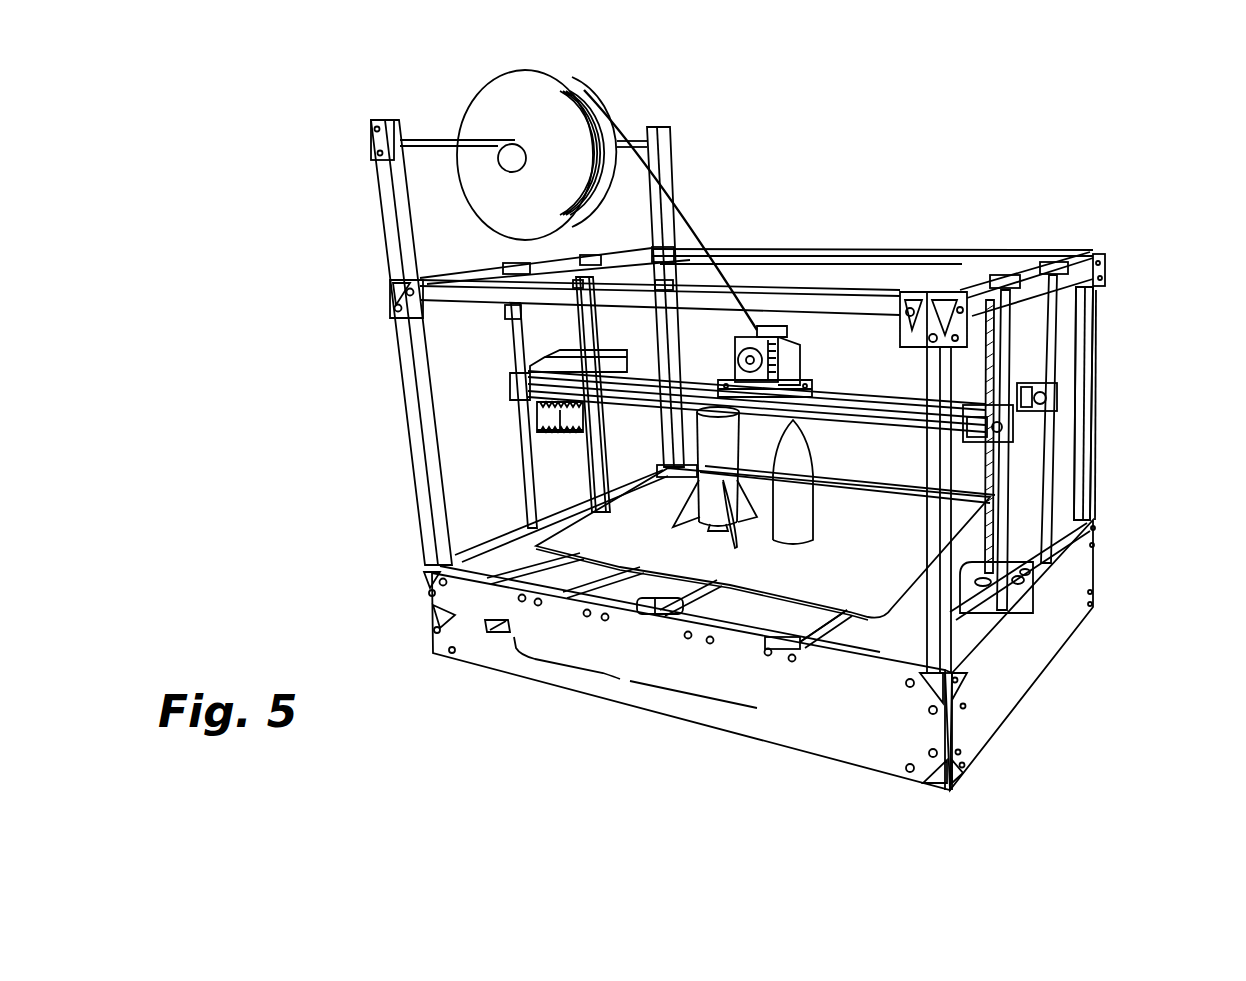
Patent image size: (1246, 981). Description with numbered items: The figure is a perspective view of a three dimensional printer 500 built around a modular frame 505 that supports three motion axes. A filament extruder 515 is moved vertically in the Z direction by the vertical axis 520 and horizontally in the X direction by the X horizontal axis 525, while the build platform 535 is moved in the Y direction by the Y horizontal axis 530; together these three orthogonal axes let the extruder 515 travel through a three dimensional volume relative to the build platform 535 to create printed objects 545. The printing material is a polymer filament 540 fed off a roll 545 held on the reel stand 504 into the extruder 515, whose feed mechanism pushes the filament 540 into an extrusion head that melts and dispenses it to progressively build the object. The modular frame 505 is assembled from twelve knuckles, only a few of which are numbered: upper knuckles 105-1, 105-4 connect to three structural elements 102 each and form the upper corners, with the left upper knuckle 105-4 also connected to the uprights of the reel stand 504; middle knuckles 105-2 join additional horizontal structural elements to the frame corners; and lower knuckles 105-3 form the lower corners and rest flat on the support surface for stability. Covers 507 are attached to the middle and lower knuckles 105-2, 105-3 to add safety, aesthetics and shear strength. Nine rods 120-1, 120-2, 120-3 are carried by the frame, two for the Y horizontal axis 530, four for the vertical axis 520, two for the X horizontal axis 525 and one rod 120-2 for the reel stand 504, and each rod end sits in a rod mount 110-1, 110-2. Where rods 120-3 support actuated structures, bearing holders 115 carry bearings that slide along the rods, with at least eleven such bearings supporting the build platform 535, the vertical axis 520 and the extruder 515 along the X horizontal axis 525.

The three dimensional printer 500 is at (212, 110).
The reel stand 504 is at (682, 66).
The modular frame 505 is at (1150, 152).
The rod mount 110-1 is at (785, 648).
The rod mount 110-2 is at (372, 120).
The rod 120-1 is at (825, 628).
The rod 120-2 is at (441, 138).
The rod 120-3 is at (1047, 475).
The upper knuckle 105-1 is at (1102, 253).
The middle knuckle 105-2 is at (950, 687).
The lower knuckle 105-3 is at (947, 787).
The upper knuckle 105-4 is at (393, 297).
The structural element 102 is at (1088, 319).
The bearing holder 115 is at (1058, 391).
The filament extruder 515 is at (797, 347).
The vertical axis 520 is at (1068, 245).
The X horizontal axis 525 is at (1010, 462).
The build platform 535 is at (573, 547).
The Y horizontal axis 530 is at (620, 680).
The cover 507 is at (1043, 620).
The polymer filament 540 is at (692, 213).
The printed object / roll 545 is at (567, 80).